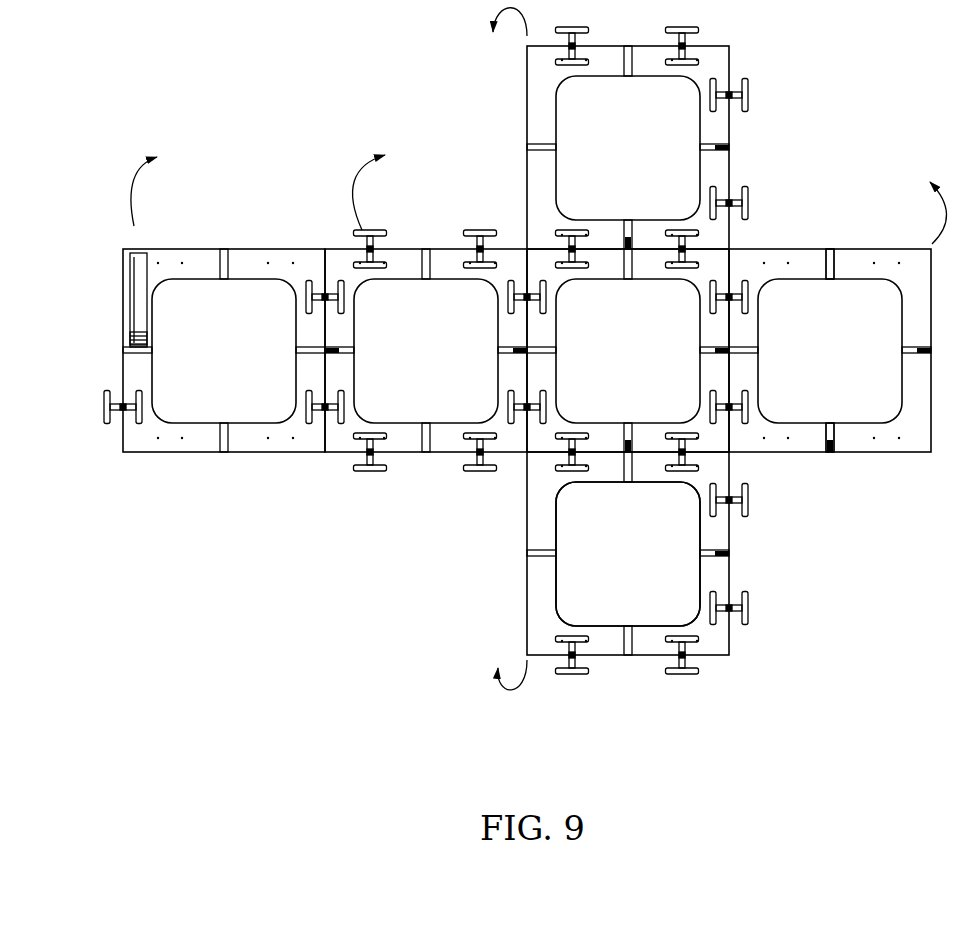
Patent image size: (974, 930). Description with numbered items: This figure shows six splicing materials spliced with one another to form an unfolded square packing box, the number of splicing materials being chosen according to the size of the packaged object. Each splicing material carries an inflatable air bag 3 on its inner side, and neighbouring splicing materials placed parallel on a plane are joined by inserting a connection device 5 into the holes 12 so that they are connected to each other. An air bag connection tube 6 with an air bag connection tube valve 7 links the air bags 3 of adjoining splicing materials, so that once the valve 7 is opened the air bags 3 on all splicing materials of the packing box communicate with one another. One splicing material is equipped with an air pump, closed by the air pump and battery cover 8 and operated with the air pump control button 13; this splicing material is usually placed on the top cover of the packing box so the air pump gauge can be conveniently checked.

The inflatable air bag 3 is at (605, 556).
The connection device 5 is at (752, 610).
The air bag connection tube 6 is at (832, 250).
The air bag connection tube valve 7 is at (833, 455).
The air pump and battery cover 8 is at (143, 254).
The holes 12 is at (543, 193).
The air pump control button 13 is at (127, 336).